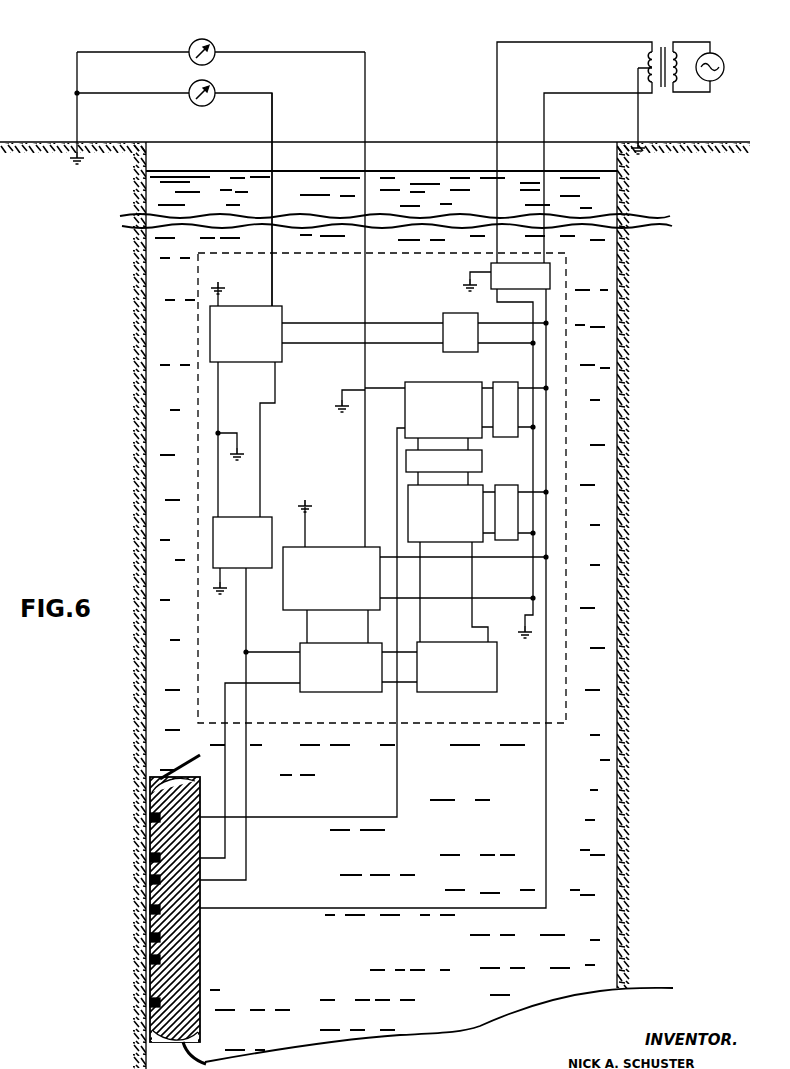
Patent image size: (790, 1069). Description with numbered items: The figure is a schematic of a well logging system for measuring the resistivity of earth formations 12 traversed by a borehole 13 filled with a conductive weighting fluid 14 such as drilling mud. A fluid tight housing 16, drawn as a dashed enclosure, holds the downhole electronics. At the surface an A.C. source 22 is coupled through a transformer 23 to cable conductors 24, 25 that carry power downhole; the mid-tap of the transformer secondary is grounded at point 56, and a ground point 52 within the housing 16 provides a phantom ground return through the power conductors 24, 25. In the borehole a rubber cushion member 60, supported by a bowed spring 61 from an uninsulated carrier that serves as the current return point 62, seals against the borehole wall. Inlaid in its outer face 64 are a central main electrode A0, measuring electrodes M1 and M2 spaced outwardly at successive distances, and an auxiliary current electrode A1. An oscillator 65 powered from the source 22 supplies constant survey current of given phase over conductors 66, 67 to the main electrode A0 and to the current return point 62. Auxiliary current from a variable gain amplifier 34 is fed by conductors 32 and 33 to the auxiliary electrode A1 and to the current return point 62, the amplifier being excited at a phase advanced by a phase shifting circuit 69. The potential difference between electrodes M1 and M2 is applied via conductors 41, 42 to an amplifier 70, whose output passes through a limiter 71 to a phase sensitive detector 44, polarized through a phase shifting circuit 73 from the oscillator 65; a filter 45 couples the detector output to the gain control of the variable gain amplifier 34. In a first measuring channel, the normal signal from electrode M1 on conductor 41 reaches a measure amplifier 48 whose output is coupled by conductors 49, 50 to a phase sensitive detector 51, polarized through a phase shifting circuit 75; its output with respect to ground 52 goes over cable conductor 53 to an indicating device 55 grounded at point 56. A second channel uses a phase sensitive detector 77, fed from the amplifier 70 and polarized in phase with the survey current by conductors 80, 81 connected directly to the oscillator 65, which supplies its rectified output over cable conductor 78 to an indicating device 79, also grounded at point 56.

The earth formations 12 is at (646, 779).
The borehole 13 is at (617, 822).
The conductive weighting fluid 14 is at (490, 840).
The fluid tight housing 16 is at (569, 446).
The A.C. source 22 is at (724, 61).
The transformer 23 is at (662, 46).
The cable conductor 24 is at (598, 42).
The cable conductor 25 is at (612, 93).
The conductor 32 is at (398, 752).
The conductor 33 is at (356, 387).
The variable gain amplifier 34 is at (428, 382).
The conductor 41 is at (247, 797).
The conductor 42 is at (226, 763).
The phase sensitive detector 44 is at (425, 542).
The filter 45 is at (482, 468).
The measure amplifier 48 is at (272, 532).
The conductor 49 is at (219, 423).
The conductor 50 is at (262, 420).
The phase sensitive detector 51 is at (210, 333).
The ground point 52 is at (220, 288).
The cable conductor 53 is at (273, 300).
The indicating device 55 is at (210, 104).
The ground point 56 is at (74, 164).
The cushion member 60 is at (200, 1006).
The bowed spring 61 is at (207, 1056).
The current return point 62 is at (341, 414).
The outer face 64 is at (150, 802).
The oscillator 65 is at (550, 270).
The conductor 66 is at (547, 363).
The conductor 67 is at (533, 366).
The phase shifting circuit 69 is at (498, 382).
The amplifier 70 is at (318, 692).
The limiter 71 is at (465, 692).
The phase shifting circuit 73 is at (504, 486).
The phase shifting circuit 75 is at (443, 313).
The phase sensitive detector 77 is at (322, 547).
The cable conductor 78 is at (366, 302).
The indicating device 79 is at (210, 44).
The conductor 80 is at (540, 560).
The conductor 81 is at (526, 597).
The auxiliary current electrode A1 is at (150, 818).
The main electrode A0 is at (150, 909).
The measuring electrode M1 is at (150, 880).
The measuring electrode M2 is at (150, 858).